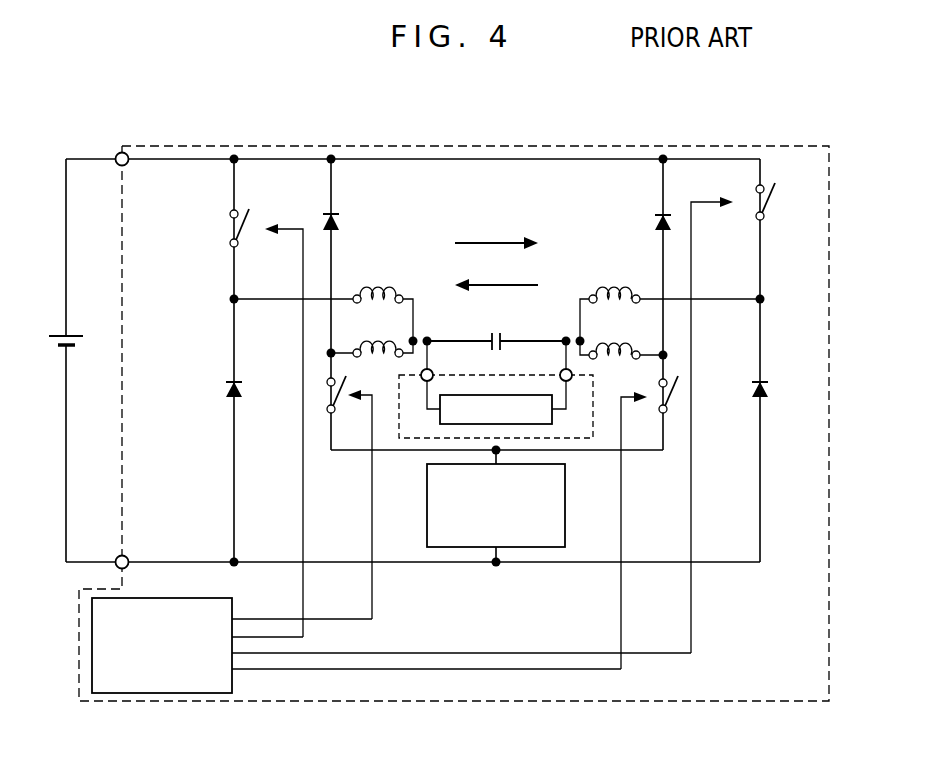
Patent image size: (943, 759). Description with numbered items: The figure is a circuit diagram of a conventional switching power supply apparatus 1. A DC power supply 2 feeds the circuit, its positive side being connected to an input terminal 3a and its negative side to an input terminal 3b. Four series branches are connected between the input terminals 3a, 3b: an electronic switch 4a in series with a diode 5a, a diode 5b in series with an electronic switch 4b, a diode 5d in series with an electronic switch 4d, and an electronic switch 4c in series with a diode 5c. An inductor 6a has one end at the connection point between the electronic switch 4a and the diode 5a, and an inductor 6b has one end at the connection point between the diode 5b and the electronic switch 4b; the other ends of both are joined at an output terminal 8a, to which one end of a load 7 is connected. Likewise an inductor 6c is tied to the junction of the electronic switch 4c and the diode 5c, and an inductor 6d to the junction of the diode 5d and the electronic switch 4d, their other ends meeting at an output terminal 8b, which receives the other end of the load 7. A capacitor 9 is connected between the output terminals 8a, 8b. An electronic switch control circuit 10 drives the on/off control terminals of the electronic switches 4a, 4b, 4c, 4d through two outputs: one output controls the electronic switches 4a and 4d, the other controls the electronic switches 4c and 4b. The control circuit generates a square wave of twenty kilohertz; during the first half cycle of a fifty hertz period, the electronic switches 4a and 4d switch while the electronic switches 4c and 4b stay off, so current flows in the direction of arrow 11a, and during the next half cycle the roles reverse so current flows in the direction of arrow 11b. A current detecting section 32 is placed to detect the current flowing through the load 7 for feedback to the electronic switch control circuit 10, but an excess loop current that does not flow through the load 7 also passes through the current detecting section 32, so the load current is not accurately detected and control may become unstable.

The switching power supply apparatus 1 is at (705, 146).
The DC power supply 2 is at (77, 336).
The input terminal 3a is at (120, 152).
The input terminal 3b is at (118, 556).
The electronic switch 4a is at (228, 237).
The electronic switch 4b is at (338, 393).
The electronic switch 4c is at (773, 205).
The electronic switch 4d is at (673, 398).
The diode 5a is at (227, 390).
The diode 5b is at (340, 222).
The diode 5c is at (767, 387).
The diode 5d is at (655, 218).
The inductor 6a is at (380, 285).
The inductor 6b is at (382, 360).
The inductor 6c is at (613, 285).
The inductor 6d is at (612, 362).
The load 7 is at (515, 395).
The output terminal 8a is at (423, 382).
The output terminal 8b is at (571, 381).
The capacitor 9 is at (490, 333).
The electronic switch control circuit 10 is at (92, 645).
The arrow 11a is at (497, 243).
The arrow 11b is at (500, 285).
The current detecting section 32 is at (427, 530).